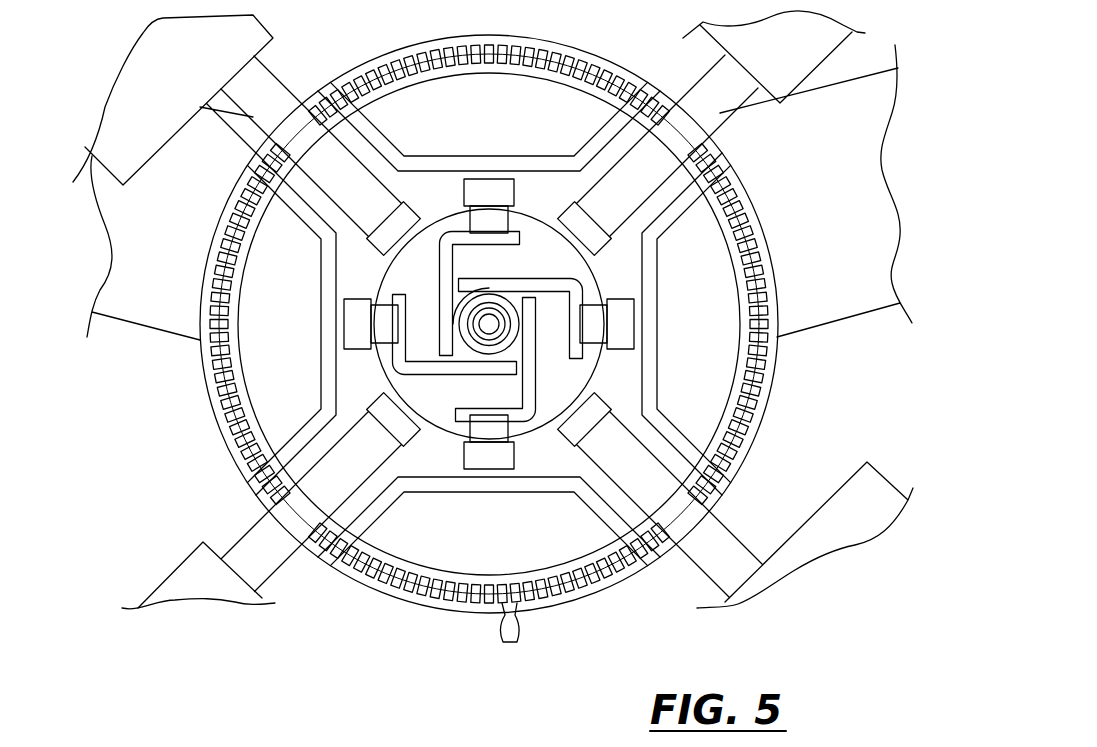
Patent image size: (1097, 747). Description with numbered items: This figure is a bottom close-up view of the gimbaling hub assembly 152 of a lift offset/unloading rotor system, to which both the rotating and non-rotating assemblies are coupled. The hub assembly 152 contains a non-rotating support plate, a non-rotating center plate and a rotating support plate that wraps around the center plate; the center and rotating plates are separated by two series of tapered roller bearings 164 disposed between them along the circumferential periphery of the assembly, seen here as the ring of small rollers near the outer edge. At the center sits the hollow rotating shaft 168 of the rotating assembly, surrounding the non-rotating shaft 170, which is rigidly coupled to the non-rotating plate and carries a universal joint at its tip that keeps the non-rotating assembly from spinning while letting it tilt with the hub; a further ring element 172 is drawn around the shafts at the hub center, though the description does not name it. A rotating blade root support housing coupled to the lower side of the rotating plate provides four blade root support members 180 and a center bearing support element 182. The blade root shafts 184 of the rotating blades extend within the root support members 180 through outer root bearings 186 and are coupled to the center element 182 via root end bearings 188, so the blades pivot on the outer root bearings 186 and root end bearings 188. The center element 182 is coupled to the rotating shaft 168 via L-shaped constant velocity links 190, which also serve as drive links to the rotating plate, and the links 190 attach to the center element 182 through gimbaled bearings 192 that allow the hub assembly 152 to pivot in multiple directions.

The gimbaling hub assembly 152 is at (484, 178).
The tapered roller bearings 164 is at (509, 639).
The hollow rotating shaft 168 is at (527, 348).
The non-rotating shaft 170 is at (487, 312).
The inner ring 172 is at (518, 314).
The blade root support members 180 is at (300, 213).
The center bearing support element 182 is at (433, 195).
The blade root shafts 184 is at (262, 72).
The outer root bearings 186 is at (677, 103).
The root end bearings 188 is at (580, 207).
The L-shaped constant velocity links 190 is at (420, 266).
The gimbaled bearings 192 is at (633, 338).